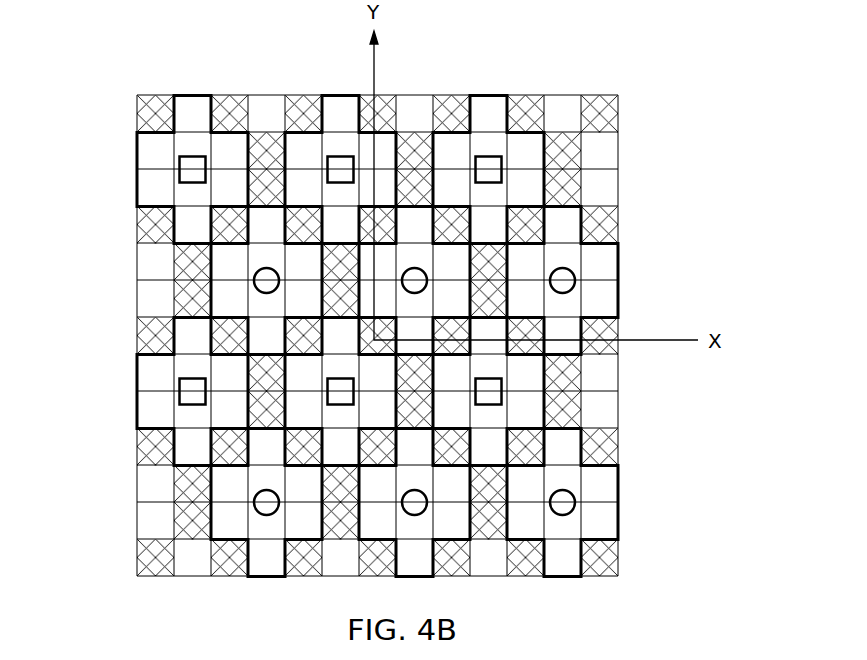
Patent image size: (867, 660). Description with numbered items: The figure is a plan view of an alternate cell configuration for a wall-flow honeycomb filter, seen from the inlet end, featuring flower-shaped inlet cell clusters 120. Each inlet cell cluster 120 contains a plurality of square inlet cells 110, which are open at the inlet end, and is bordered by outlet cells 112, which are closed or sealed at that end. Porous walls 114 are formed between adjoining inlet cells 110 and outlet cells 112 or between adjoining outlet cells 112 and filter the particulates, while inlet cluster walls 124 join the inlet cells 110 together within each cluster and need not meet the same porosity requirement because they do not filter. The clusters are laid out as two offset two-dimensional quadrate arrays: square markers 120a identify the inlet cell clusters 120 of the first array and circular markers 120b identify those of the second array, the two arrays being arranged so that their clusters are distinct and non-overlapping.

The inlet cell 110 is at (490, 110).
The outlet cell 112 is at (152, 223).
The porous wall 114 is at (285, 110).
The inlet cell cluster 120 is at (568, 202).
The square marker 120a is at (193, 155).
The circular marker 120b is at (254, 276).
The inlet cluster wall 124 is at (580, 297).